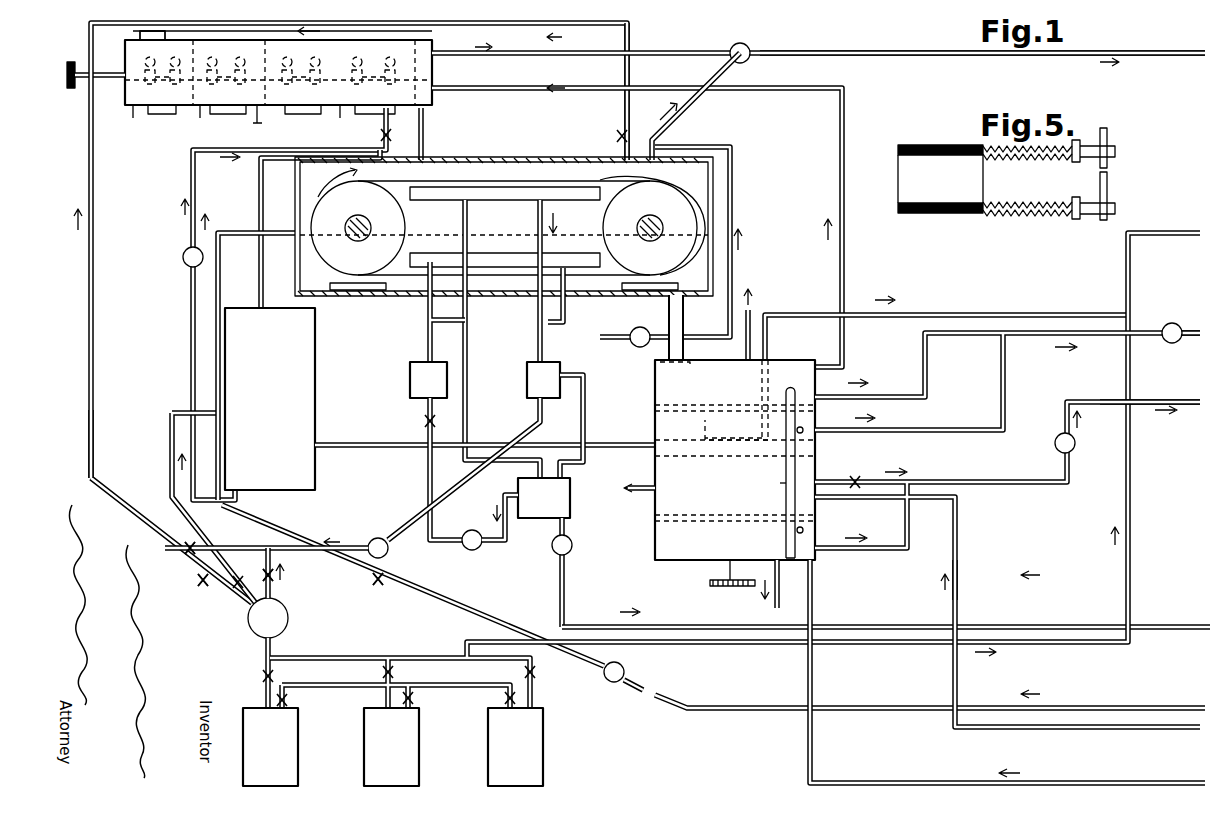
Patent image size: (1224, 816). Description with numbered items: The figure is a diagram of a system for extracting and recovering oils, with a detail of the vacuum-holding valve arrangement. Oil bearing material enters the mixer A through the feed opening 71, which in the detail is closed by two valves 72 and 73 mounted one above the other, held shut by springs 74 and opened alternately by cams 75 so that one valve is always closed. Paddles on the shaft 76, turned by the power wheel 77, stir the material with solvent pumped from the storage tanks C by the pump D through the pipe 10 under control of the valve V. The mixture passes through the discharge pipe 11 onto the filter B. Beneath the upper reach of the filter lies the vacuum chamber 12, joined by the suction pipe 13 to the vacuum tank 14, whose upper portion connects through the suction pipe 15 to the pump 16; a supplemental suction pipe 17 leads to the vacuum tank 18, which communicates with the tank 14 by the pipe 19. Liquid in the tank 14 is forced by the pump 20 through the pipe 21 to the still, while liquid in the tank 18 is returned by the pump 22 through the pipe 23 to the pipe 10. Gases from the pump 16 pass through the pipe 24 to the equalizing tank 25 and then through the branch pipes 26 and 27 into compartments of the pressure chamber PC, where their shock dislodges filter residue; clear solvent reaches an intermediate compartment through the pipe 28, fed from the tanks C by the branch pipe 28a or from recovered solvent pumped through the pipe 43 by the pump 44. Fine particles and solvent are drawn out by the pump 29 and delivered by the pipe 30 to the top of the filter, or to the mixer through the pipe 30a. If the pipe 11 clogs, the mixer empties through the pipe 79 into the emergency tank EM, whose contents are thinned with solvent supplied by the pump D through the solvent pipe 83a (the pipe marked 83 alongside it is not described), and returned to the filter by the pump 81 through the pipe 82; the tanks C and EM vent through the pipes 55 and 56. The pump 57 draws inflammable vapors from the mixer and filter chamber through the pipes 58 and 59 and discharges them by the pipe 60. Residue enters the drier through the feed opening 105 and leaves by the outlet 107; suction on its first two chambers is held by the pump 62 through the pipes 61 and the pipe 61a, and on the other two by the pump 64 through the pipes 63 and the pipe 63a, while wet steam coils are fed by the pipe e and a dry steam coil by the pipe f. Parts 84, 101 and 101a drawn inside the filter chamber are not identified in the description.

In FIG. 1, the pipe 10 is at (88, 170).
In FIG. 1, the discharge pipe 11 is at (426, 127).
In FIG. 1, the vacuum chamber 12 is at (495, 187).
In FIG. 1, the suction pipe 13 is at (470, 347).
In FIG. 1, the vacuum tank 14 is at (544, 498).
In FIG. 1, the suction pipe 15 is at (510, 530).
In FIG. 1, the pump 16 is at (472, 530).
In FIG. 1, the supplemental suction pipe 17 is at (548, 214).
In FIG. 1, the vacuum tank 18 is at (543, 380).
In FIG. 1, the pipe 19 is at (586, 406).
In FIG. 1, the pump 20 is at (574, 545).
In FIG. 1, the pipe 21 is at (700, 626).
In FIG. 1, the pump 22 is at (378, 538).
In FIG. 1, the pipe 23 is at (292, 546).
In FIG. 1, the pipe 24 is at (428, 478).
In FIG. 1, the equalizing tank 25 is at (428, 380).
In FIG. 1, the branch pipe 26 is at (424, 306).
In FIG. 1, the branch pipe 27 is at (568, 312).
In FIG. 1, the pipe 28 is at (226, 226).
In FIG. 1, the branch pipe 28a is at (293, 573).
In FIG. 1, the pump 29 is at (640, 327).
In FIG. 1, the pipe 30 is at (733, 210).
In FIG. 1, the pipe 30a is at (628, 43).
In FIG. 1, the pipe 43 is at (1175, 707).
In FIG. 1, the pump 44 is at (624, 668).
In FIG. 1, the vent pipe 55 is at (1172, 234).
In FIG. 1, the vent pipe 56 is at (360, 445).
In FIG. 1, the pump 57 is at (744, 45).
In FIG. 1, the pipe 58 is at (688, 110).
In FIG. 1, the pipe 59 is at (552, 52).
In FIG. 1, the pipe 60 is at (1160, 53).
In FIG. 1, the pipes 61 is at (925, 374).
In FIG. 1, the pipe 61a is at (1188, 336).
In FIG. 1, the pump 62 is at (1174, 318).
In FIG. 1, the pipes 63 is at (945, 480).
In FIG. 1, the pipe 63a is at (1165, 401).
In FIG. 1, the pump 64 is at (1056, 446).
In FIG. 1, the feed opening 71 is at (150, 31).
In FIG. 5, the valve 72 is at (918, 140).
In FIG. 5, the valve 73 is at (912, 210).
In FIG. 5, the springs 74 is at (1028, 170).
In FIG. 5, the cams 75 is at (1110, 152).
In FIG. 1, the shaft 76 is at (112, 78).
In FIG. 1, the power wheel 77 is at (68, 68).
In FIG. 1, the pipe 79 is at (260, 186).
In FIG. 1, the pump 81 is at (182, 258).
In FIG. 1, the pipe 82 is at (192, 183).
In FIG. 1, the pipe 83 is at (111, 441).
In FIG. 1, the pipe 83a is at (172, 470).
In FIG. 1, the belt guard 84 is at (703, 186).
In FIG. 1, the roller 101 is at (650, 235).
In FIG. 1, the roller 101a is at (358, 229).
In FIG. 1, the feed opening 105 is at (668, 368).
In FIG. 1, the outlet opening 107 is at (780, 553).
In FIG. 1, the mixer A is at (128, 90).
In FIG. 1, the filter B is at (430, 158).
In FIG. 1, the pressure chamber PC is at (478, 258).
In FIG. 1, the emergency tank EM is at (270, 399).
In FIG. 1, the pump D is at (268, 653).
In FIG. 1, the solvent storage tanks C is at (393, 747).
In FIG. 1, the valve V is at (198, 582).
In FIG. 1, the pipe e is at (814, 700).
In FIG. 1, the pipe f is at (960, 560).